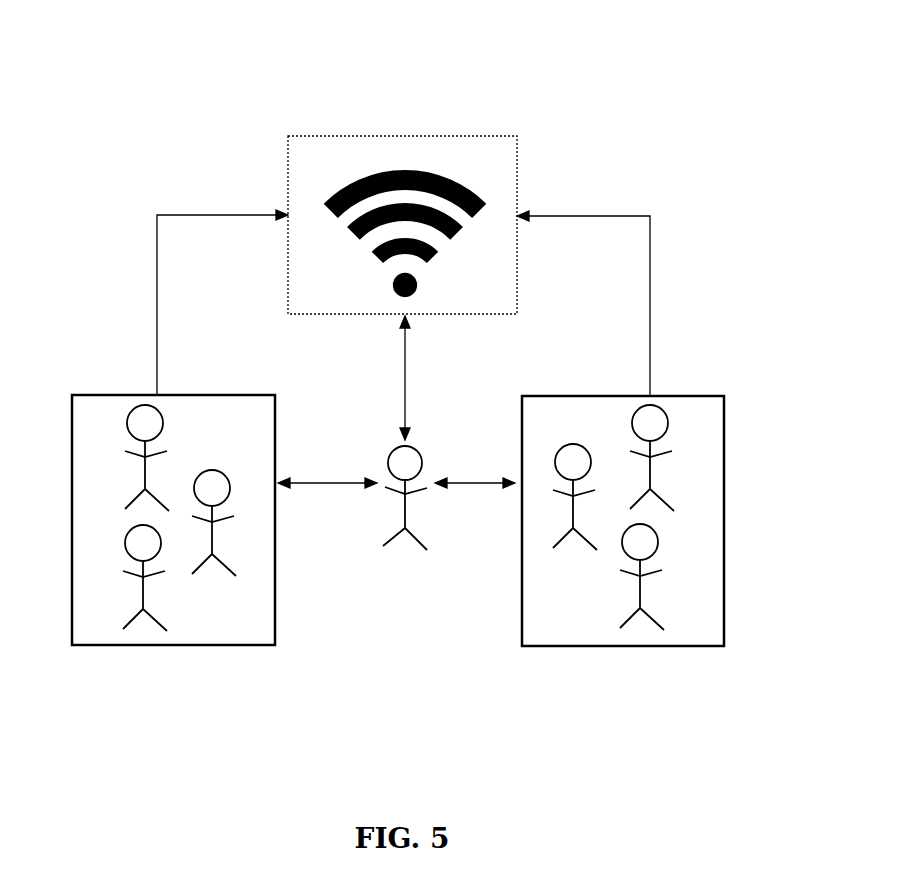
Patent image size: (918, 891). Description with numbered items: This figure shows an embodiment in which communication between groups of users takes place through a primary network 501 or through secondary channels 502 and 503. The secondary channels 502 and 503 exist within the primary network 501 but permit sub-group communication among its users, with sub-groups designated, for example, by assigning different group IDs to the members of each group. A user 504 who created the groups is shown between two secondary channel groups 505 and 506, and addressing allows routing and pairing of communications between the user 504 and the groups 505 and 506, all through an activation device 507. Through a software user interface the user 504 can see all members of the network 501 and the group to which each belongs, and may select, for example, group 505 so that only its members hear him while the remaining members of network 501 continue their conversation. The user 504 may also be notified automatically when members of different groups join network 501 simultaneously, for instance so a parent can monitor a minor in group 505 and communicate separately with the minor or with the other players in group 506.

The primary network 501 is at (215, 188).
The secondary channel 502 is at (308, 462).
The secondary channel 503 is at (488, 462).
The user 504 is at (386, 540).
The secondary channel group 505 is at (153, 669).
The secondary channel group 506 is at (628, 664).
The activation device 507 is at (405, 122).